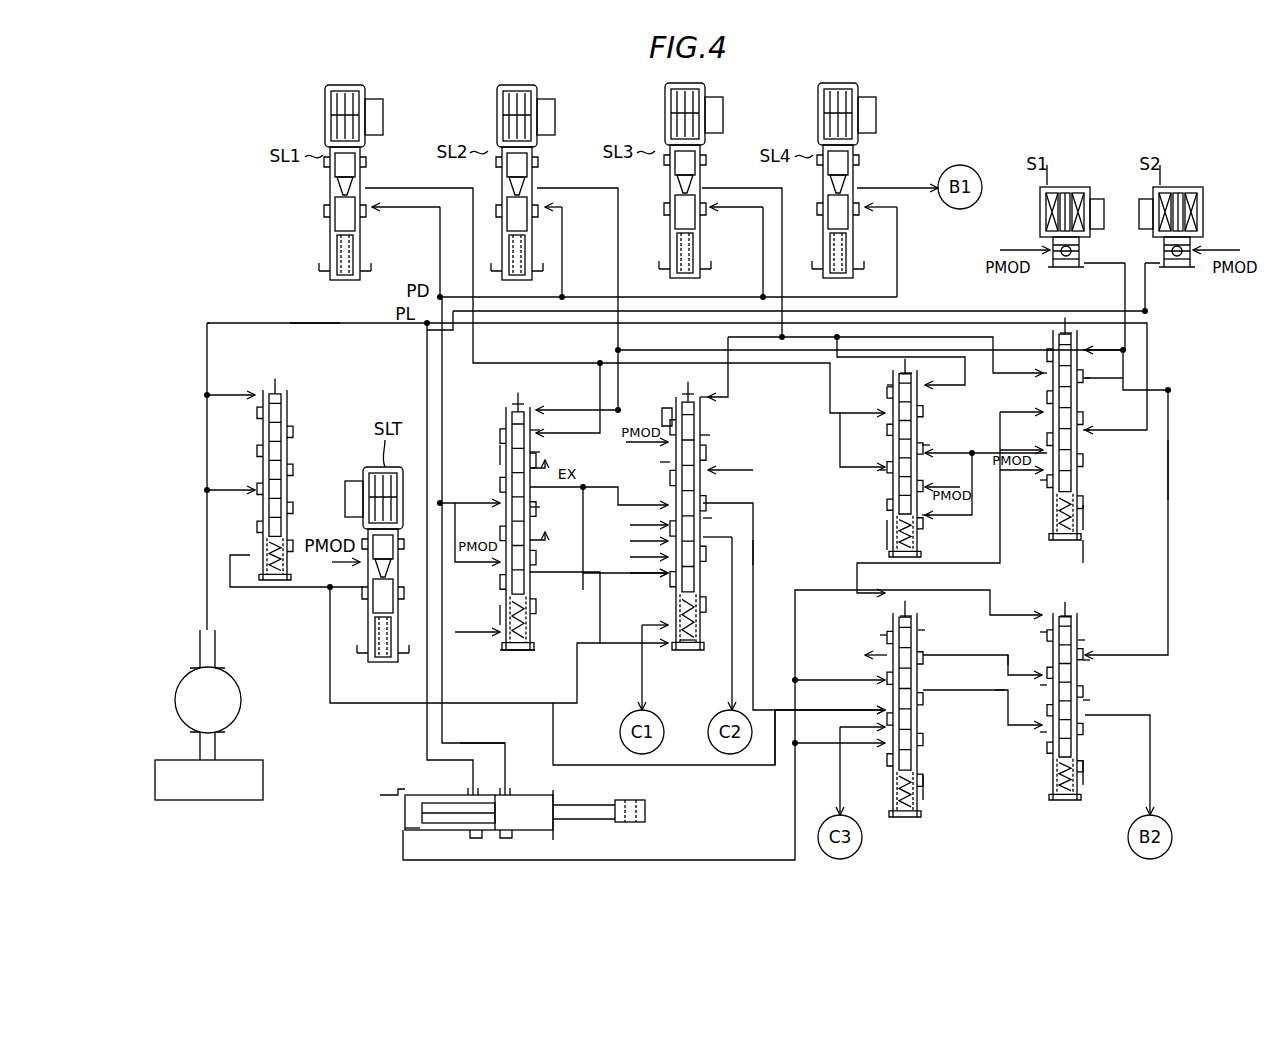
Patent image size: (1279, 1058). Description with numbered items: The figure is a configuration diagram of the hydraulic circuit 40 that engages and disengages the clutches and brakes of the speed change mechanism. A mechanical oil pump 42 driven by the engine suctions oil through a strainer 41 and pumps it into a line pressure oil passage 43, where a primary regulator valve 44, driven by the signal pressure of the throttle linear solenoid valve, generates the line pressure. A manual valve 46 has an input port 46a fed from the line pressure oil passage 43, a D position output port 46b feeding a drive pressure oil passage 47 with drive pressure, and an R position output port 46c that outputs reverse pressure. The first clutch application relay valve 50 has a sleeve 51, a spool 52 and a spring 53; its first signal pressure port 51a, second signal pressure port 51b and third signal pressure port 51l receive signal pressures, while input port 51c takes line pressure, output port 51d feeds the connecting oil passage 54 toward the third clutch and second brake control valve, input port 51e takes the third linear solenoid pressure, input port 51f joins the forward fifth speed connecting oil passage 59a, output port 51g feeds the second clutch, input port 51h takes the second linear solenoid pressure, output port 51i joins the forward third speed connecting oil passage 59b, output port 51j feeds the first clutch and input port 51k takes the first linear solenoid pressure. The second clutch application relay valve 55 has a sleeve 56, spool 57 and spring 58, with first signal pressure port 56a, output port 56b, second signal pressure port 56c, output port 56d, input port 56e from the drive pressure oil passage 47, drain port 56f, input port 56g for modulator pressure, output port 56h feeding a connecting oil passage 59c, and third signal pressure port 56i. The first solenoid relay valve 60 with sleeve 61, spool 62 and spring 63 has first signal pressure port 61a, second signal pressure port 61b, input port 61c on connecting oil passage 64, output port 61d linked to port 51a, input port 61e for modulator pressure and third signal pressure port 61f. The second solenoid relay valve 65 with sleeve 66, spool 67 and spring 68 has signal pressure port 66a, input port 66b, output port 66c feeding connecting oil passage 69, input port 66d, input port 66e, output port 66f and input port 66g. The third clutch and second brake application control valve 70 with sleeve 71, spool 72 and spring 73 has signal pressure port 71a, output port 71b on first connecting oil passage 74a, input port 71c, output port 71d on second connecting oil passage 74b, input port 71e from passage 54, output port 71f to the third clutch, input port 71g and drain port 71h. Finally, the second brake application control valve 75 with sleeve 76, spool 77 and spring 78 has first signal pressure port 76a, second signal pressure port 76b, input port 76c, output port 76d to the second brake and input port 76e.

The hydraulic circuit 40 is at (234, 202).
The strainer 41 is at (154, 784).
The mechanical oil pump 42 is at (174, 698).
The line pressure oil passage 43 is at (316, 323).
The primary regulator valve 44 is at (303, 415).
The manual valve 46 is at (385, 785).
The input port 46a is at (465, 786).
The D position output port 46b is at (515, 790).
The R position output port 46c is at (402, 833).
The drive pressure oil passage 47 is at (480, 743).
The first clutch application relay valve 50 is at (690, 392).
The sleeve 51 is at (681, 397).
The first signal pressure port 51a is at (708, 413).
The second signal pressure port 51b is at (668, 462).
The input port 51c is at (708, 458).
The output port 51d is at (710, 500).
The input port 51e is at (710, 515).
The input port 51f is at (669, 530).
The output port 51g is at (710, 529).
The input port 51h is at (670, 545).
The output port 51i is at (667, 561).
The output port 51j is at (667, 577).
The input port 51k is at (656, 622).
The third signal pressure port 51l is at (672, 639).
The spool 52 is at (672, 419).
The spring 53 is at (708, 440).
The C3-B2 connecting oil passage 54 is at (759, 554).
The second clutch application relay valve 55 is at (528, 400).
The sleeve 56 is at (518, 408).
The first signal pressure port 56a is at (546, 428).
The output port 56b is at (541, 494).
The second signal pressure port 56c is at (536, 454).
The output port 56d is at (541, 508).
The input port 56e is at (503, 525).
The drain port 56f is at (536, 548).
The input port 56g is at (503, 586).
The output port 56h is at (538, 576).
The third signal pressure port 56i is at (506, 654).
The spool 57 is at (504, 455).
The spring 58 is at (504, 614).
The forward fifth speed connecting oil passage 59a is at (622, 486).
The forward third speed connecting oil passage 59b is at (604, 586).
The connecting oil passage 59c is at (578, 763).
The first solenoid relay valve 60 is at (924, 375).
The sleeve 61 is at (894, 377).
The first signal pressure port 61a is at (924, 390).
The second signal pressure port 61b is at (885, 413).
The input port 61c is at (924, 443).
The output port 61d is at (885, 463).
The input port 61e is at (924, 470).
The third signal pressure port 61f is at (926, 530).
The spool 62 is at (892, 390).
The spring 63 is at (886, 532).
The connecting oil passage 64 is at (972, 441).
The second solenoid relay valve 65 is at (1074, 338).
The sleeve 66 is at (1047, 341).
The signal pressure port 66a is at (1076, 355).
The input port 66b is at (1045, 376).
The output port 66c is at (1076, 380).
The input port 66d is at (1043, 404).
The input port 66e is at (1076, 428).
The output port 66f is at (1038, 449).
The input port 66g is at (1043, 481).
The spool 67 is at (1050, 353).
The spring 68 is at (1081, 518).
The connecting oil passage 69 is at (1178, 473).
The C3-B2 application control valve 70 is at (935, 618).
The sleeve 71 is at (897, 620).
The signal pressure port 71a is at (878, 634).
The output port 71b is at (924, 653).
The input port 71c is at (878, 679).
The output port 71d is at (926, 688).
The input port 71e is at (878, 706).
The output port 71f is at (880, 744).
The input port 71g is at (883, 744).
The drain port 71h is at (878, 651).
The spool 72 is at (923, 633).
The spring 73 is at (925, 784).
The first connecting oil passage 74a is at (1008, 659).
The second connecting oil passage 74b is at (995, 702).
The B2 application control valve 75 is at (1089, 611).
The sleeve 76 is at (1062, 614).
The first signal pressure port 76a is at (1053, 634).
The second signal pressure port 76b is at (1083, 673).
The input port 76c is at (1048, 684).
The output port 76d is at (1083, 700).
The input port 76e is at (1042, 735).
The spool 77 is at (1081, 640).
The spring 78 is at (1088, 766).